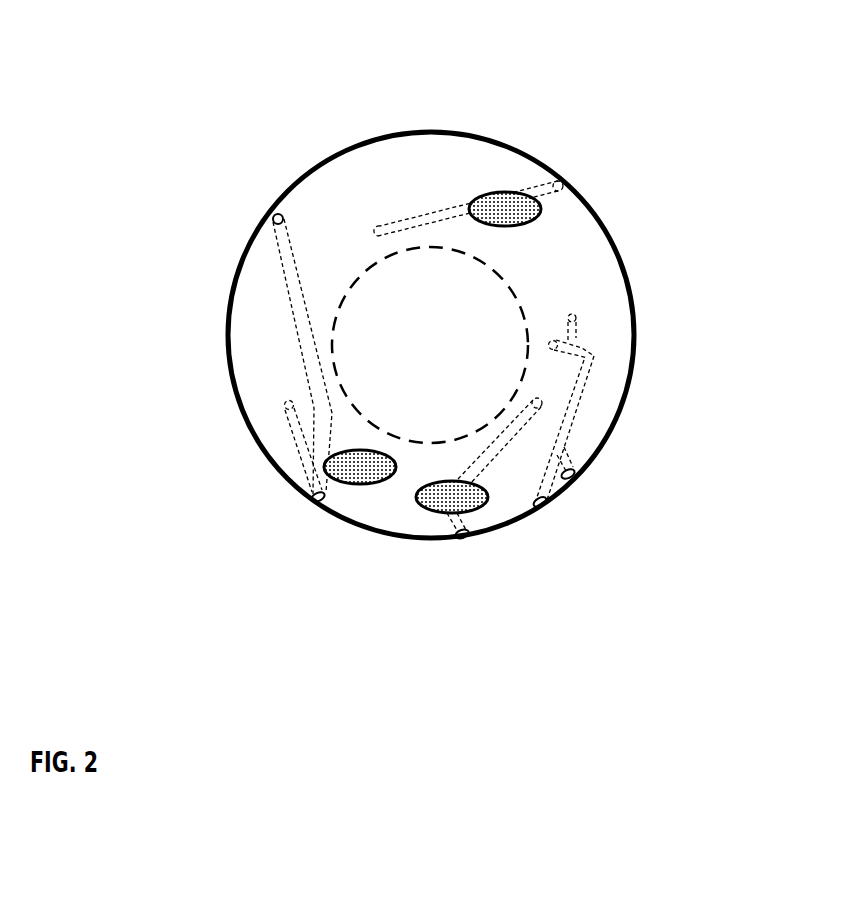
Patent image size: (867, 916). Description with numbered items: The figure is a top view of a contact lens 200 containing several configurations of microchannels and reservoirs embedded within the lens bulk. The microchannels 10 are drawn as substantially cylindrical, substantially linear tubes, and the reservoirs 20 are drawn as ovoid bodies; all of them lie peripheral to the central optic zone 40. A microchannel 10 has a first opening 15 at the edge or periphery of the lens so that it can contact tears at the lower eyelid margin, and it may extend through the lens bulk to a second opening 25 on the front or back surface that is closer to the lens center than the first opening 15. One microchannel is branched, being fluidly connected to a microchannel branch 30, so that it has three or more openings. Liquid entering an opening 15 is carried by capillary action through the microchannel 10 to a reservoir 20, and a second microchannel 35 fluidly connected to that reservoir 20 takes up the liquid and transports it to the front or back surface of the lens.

The contact lens 200 is at (350, 125).
The microchannel 10 is at (292, 440).
The first opening 15 is at (272, 217).
The reservoir 20 is at (507, 205).
The second opening 25 is at (288, 405).
The microchannel branch 30 is at (574, 332).
The second microchannel 35 is at (425, 212).
The optic zone 40 is at (487, 284).